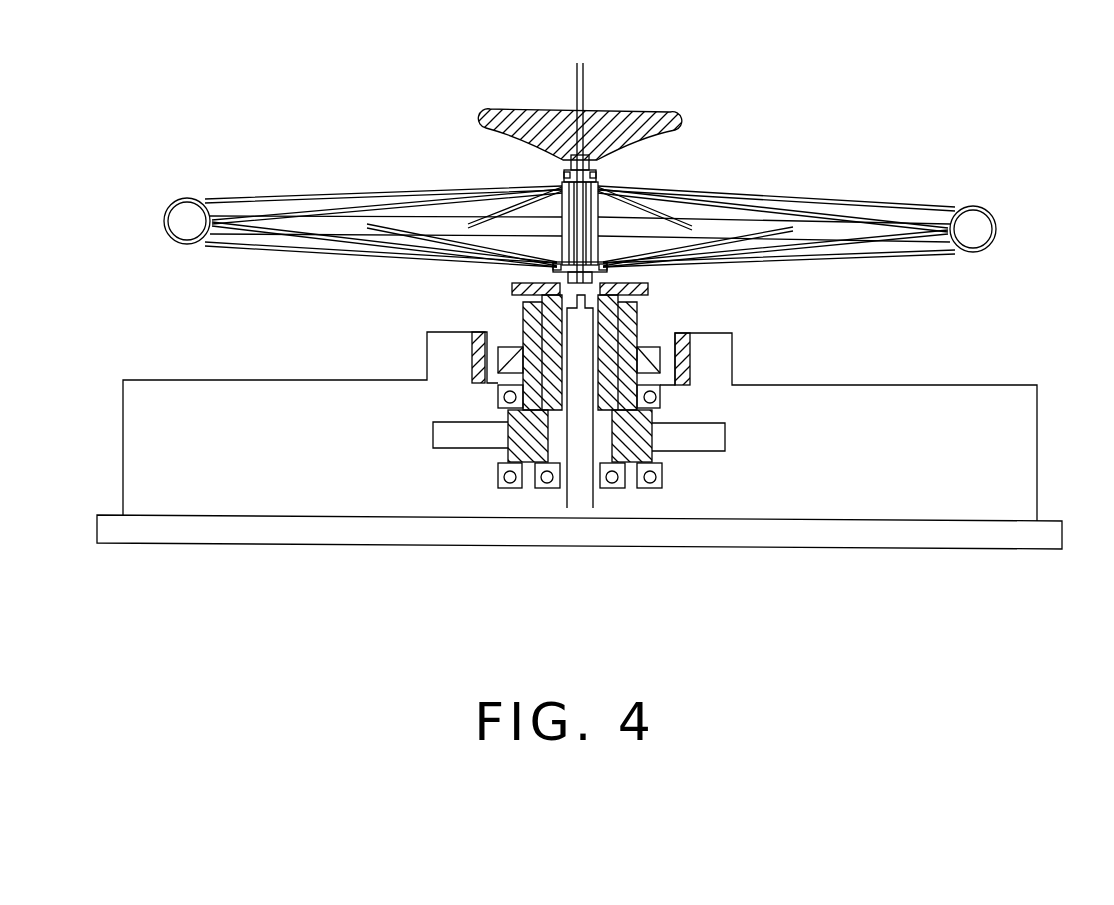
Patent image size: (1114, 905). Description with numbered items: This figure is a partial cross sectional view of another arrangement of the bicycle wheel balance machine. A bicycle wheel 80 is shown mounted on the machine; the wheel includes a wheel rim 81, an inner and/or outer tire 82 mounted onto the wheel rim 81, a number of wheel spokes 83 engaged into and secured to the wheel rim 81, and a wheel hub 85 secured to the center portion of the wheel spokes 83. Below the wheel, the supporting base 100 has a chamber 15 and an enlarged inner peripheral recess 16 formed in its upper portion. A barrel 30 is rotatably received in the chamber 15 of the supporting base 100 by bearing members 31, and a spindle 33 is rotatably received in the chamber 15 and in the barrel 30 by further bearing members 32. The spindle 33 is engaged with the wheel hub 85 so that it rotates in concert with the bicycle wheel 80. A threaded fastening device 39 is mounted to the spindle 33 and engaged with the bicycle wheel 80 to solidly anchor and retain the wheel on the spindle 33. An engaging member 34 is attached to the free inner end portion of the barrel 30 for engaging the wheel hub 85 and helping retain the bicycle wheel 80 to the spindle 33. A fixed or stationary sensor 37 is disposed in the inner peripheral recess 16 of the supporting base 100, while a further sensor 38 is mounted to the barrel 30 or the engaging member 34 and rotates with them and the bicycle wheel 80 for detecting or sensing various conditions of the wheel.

The supporting base 100 is at (838, 527).
The inner peripheral recess 16 is at (472, 367).
The fixed or stationary detector or sensor 37 is at (682, 358).
The detector or sensor 38 is at (512, 348).
The bearing members 32 is at (547, 477).
The barrel 30 is at (628, 440).
The chamber 15 is at (497, 488).
The bearing members 31 is at (650, 477).
The spindle 33 is at (583, 425).
The engaging member 34 is at (647, 287).
The wheel hub 85 is at (565, 173).
The fastening device 39 is at (617, 123).
The outer tire 82 is at (163, 217).
The bicycle wheel 80 is at (990, 224).
The wheel rim 81 is at (200, 199).
The wheel spokes 83 is at (287, 228).